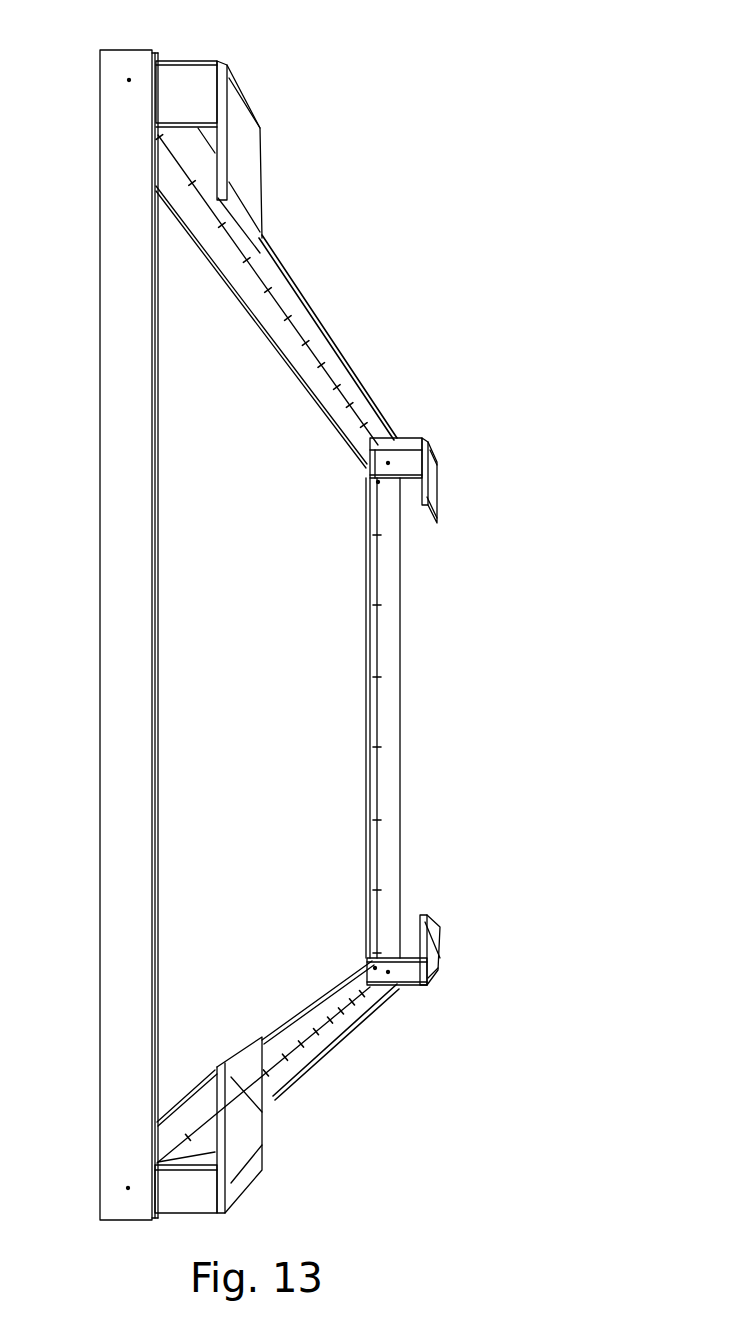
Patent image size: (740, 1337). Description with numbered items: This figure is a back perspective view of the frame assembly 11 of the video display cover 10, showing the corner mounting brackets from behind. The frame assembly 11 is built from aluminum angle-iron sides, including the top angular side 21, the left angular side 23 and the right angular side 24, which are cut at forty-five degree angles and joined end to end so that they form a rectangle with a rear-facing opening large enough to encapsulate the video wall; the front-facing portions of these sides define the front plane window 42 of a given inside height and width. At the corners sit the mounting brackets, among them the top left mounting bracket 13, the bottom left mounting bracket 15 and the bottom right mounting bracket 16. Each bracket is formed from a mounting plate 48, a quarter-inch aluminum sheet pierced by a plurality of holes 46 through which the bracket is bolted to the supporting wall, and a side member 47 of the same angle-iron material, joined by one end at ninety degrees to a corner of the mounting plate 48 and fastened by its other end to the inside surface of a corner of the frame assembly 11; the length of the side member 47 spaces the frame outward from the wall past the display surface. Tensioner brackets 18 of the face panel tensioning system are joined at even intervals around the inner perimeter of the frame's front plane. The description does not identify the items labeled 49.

The video display cover 10 is at (448, 246).
The frame assembly 11 is at (330, 333).
The top left mounting bracket 13 is at (428, 433).
The bottom left mounting bracket 15 is at (433, 986).
The bottom right mounting bracket 16 is at (226, 1216).
The tensioner brackets 18 is at (377, 677).
The top angular side 21 is at (300, 311).
The left angular side 23 is at (386, 793).
The right angular side 24 is at (118, 650).
The front plane window 42 is at (367, 795).
The holes 46 is at (230, 182).
The side member 47 is at (185, 78).
The mounting plate 48 is at (250, 120).
The bolt 49 is at (129, 80).